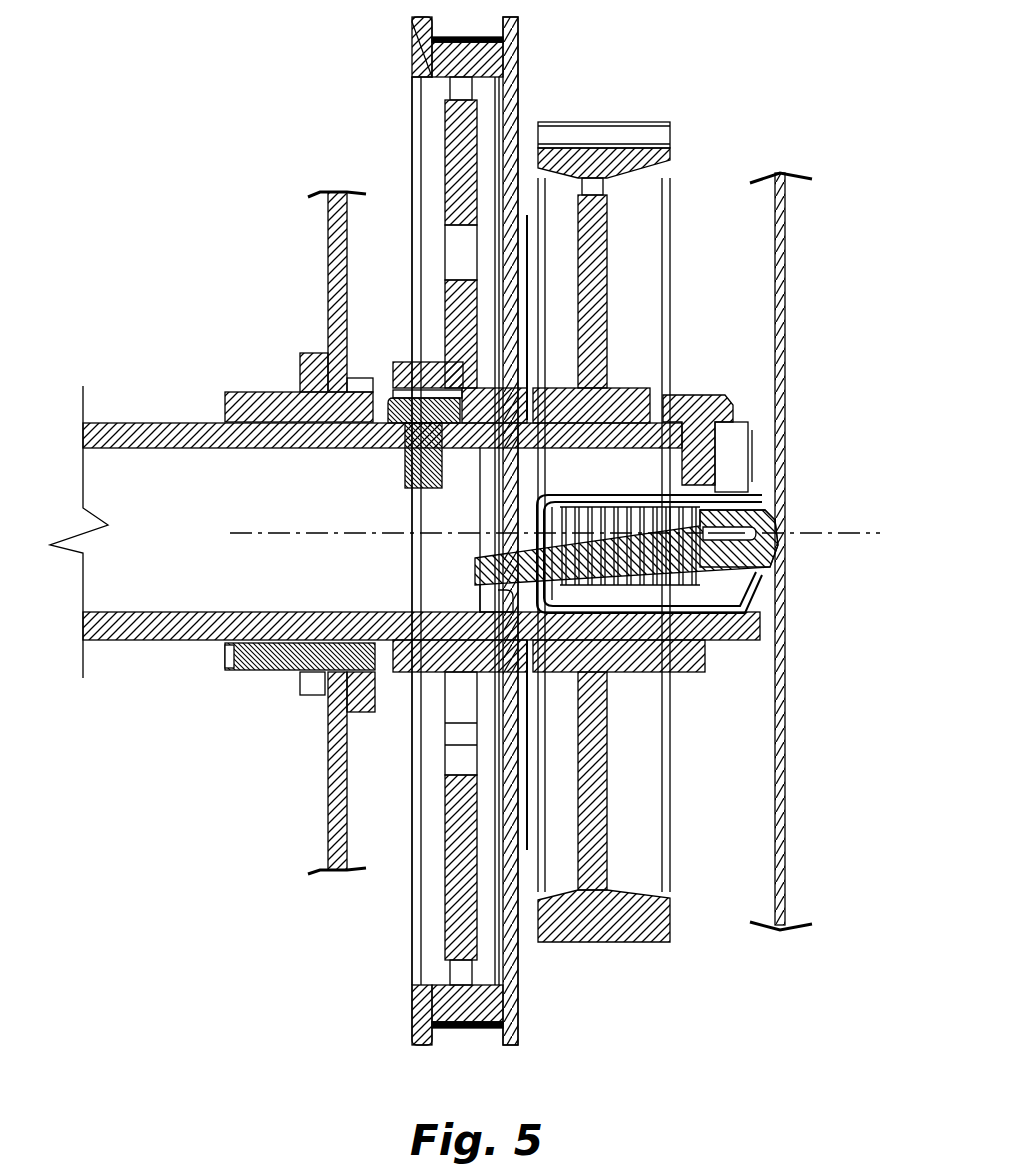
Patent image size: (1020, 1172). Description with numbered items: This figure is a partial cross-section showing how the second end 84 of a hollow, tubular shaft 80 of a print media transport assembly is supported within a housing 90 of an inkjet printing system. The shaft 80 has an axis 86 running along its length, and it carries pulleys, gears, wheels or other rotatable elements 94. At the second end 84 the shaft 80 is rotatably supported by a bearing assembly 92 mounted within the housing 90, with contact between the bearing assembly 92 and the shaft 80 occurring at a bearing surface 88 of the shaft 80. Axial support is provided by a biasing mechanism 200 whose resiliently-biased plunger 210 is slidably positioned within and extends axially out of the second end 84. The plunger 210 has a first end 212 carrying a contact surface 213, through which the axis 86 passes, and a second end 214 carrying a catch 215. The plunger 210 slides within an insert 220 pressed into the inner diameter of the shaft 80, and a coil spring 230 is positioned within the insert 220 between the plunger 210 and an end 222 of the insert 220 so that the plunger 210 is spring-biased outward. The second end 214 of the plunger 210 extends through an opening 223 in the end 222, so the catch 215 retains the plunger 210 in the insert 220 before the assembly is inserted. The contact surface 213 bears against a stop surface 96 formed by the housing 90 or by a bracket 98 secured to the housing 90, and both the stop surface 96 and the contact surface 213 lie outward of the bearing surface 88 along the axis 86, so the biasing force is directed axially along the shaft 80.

The shaft 80 is at (157, 628).
The second end 84 is at (752, 419).
The axis 86 is at (292, 536).
The bearing surface 88 is at (290, 646).
The housing 90 is at (332, 265).
The bearing assembly 92 is at (290, 400).
The rotatable elements 94 is at (435, 1003).
The stop surface 96 is at (740, 495).
The bracket 98 is at (776, 712).
The biasing mechanism 200 is at (640, 564).
The plunger 210 is at (622, 600).
The first end 212 is at (783, 563).
The contact surface 213 is at (779, 527).
The second end 214 is at (473, 572).
The catch 215 is at (510, 602).
The insert 220 is at (572, 500).
The end 222 is at (535, 515).
The opening 223 is at (537, 548).
The spring 230 is at (617, 505).